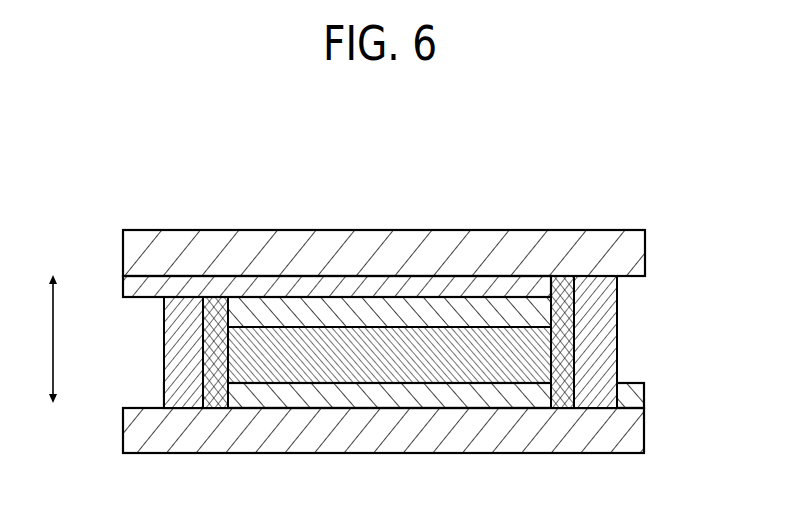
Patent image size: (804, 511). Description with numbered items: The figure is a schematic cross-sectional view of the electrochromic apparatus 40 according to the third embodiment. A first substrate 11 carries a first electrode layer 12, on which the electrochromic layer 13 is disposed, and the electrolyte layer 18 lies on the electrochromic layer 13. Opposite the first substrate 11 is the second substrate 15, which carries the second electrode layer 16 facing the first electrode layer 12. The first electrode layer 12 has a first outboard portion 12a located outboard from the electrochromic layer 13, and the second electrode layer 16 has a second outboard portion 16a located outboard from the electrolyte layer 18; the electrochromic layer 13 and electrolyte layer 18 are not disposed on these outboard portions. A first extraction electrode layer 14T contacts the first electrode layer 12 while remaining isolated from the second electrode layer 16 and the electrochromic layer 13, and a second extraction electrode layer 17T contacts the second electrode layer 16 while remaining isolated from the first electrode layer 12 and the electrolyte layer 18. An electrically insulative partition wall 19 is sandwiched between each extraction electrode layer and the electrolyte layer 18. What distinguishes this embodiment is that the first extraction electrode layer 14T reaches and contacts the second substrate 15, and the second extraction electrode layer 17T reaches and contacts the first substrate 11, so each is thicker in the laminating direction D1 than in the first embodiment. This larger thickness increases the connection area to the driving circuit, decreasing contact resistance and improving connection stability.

The first substrate 11 is at (633, 433).
The first electrode layer 12 is at (651, 396).
The first outboard portion 12a is at (608, 398).
The electrochromic layer 13 is at (503, 357).
The first extraction electrode layer 14T is at (612, 342).
The second substrate 15 is at (128, 255).
The second electrode layer 16 is at (114, 290).
The second outboard portion 16a is at (183, 290).
The second extraction electrode layer 17T is at (165, 340).
The electrolyte layer 18 is at (453, 313).
The partition wall 19 is at (210, 385).
The electrochromic apparatus 40 is at (552, 201).
The laminating direction D1 is at (38, 339).